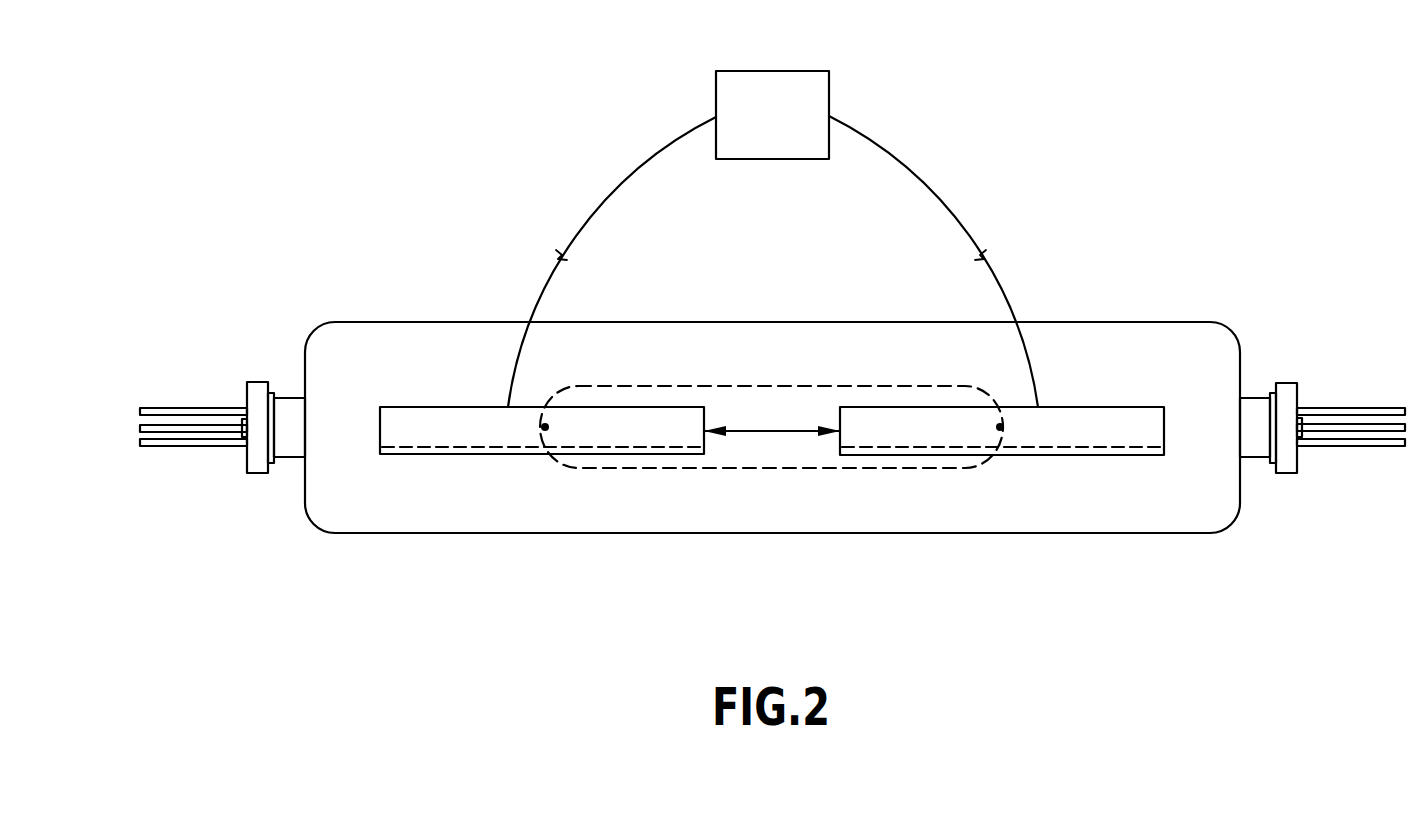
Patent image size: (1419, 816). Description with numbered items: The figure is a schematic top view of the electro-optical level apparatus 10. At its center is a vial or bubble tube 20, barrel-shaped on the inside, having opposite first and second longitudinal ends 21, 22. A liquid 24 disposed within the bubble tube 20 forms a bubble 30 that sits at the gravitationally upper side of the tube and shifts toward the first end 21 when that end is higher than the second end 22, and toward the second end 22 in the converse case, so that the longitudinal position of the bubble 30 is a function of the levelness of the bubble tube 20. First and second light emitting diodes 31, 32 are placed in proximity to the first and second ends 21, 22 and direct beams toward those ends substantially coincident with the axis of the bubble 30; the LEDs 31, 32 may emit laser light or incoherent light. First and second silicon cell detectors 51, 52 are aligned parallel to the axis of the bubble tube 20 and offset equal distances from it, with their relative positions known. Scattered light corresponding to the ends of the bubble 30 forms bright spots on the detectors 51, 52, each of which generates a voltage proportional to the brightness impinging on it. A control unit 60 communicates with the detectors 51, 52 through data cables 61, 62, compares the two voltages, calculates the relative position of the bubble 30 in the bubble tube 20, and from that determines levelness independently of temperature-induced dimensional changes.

The electro-optical level apparatus 10 is at (192, 258).
The bubble tube 20 is at (442, 535).
The first longitudinal end 21 is at (303, 493).
The second longitudinal end 22 is at (1241, 492).
The liquid 24 is at (555, 517).
The bubble 30 is at (818, 386).
The first light emitting diode 31 is at (250, 382).
The second light emitting diode 32 is at (1287, 382).
The first silicon cell detector 51 is at (420, 407).
The second silicon cell detector 52 is at (1120, 407).
The control unit 60 is at (756, 129).
The data cable 61 is at (595, 212).
The data cable 62 is at (915, 173).